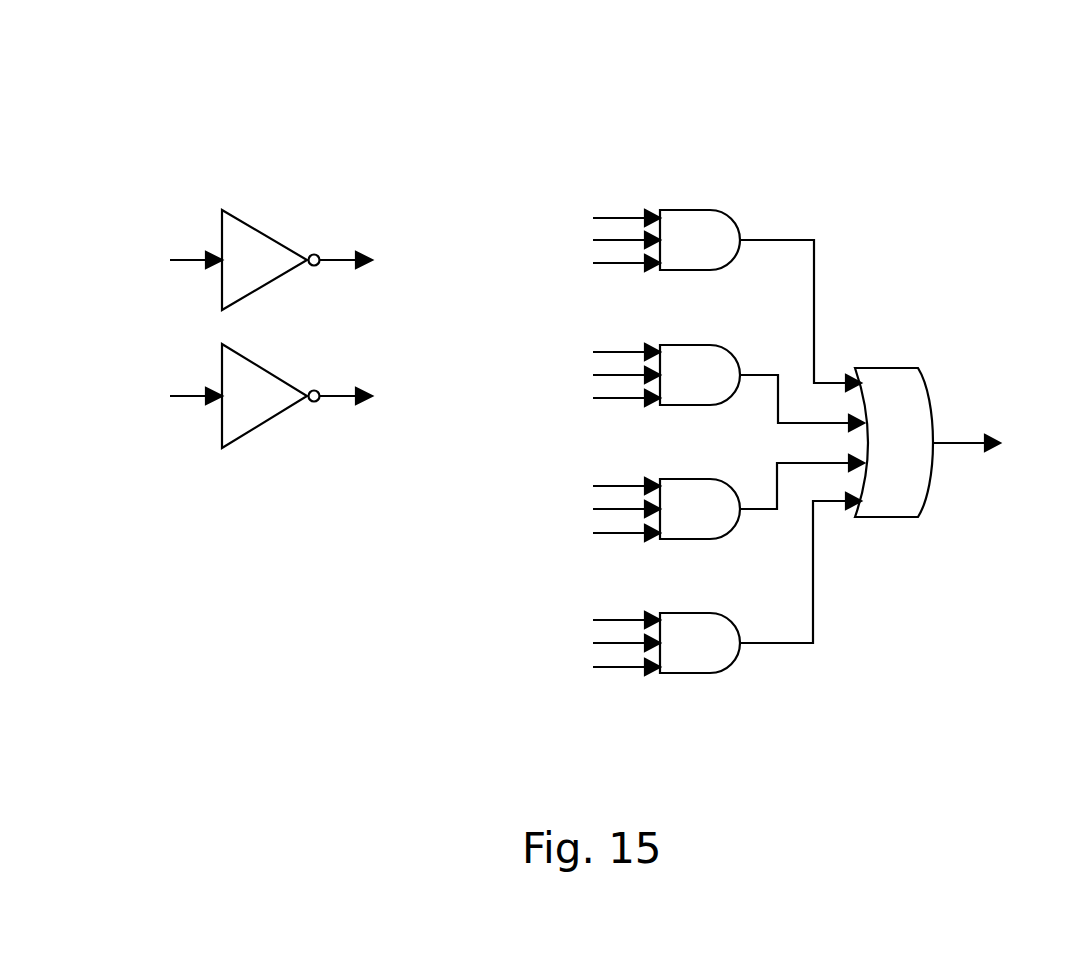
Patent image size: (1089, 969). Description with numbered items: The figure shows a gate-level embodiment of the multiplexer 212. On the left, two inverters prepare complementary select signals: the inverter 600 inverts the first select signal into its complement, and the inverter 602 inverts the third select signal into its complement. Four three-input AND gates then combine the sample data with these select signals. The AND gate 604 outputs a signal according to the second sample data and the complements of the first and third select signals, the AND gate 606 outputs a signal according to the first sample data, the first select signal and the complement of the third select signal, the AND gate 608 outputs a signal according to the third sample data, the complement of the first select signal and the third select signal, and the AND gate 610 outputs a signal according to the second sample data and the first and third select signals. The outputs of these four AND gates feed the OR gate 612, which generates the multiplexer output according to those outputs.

The multiplexer 212 is at (970, 124).
The inverter 600 is at (263, 232).
The inverter 602 is at (263, 366).
The AND gate 604 is at (683, 208).
The AND gate 606 is at (683, 343).
The AND gate 608 is at (683, 478).
The AND gate 610 is at (683, 612).
The OR gate 612 is at (884, 366).